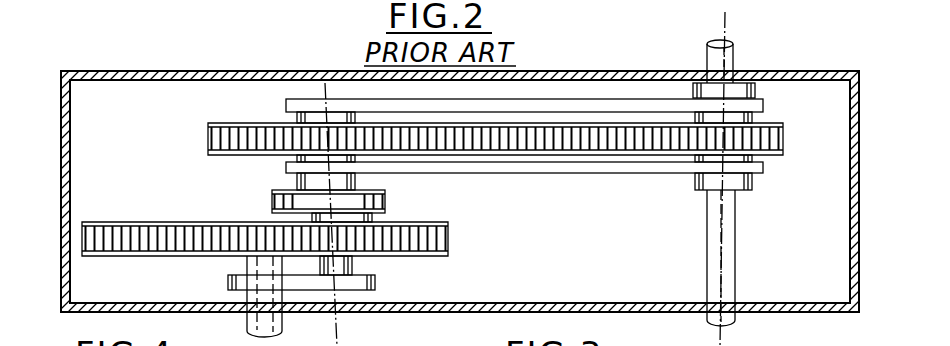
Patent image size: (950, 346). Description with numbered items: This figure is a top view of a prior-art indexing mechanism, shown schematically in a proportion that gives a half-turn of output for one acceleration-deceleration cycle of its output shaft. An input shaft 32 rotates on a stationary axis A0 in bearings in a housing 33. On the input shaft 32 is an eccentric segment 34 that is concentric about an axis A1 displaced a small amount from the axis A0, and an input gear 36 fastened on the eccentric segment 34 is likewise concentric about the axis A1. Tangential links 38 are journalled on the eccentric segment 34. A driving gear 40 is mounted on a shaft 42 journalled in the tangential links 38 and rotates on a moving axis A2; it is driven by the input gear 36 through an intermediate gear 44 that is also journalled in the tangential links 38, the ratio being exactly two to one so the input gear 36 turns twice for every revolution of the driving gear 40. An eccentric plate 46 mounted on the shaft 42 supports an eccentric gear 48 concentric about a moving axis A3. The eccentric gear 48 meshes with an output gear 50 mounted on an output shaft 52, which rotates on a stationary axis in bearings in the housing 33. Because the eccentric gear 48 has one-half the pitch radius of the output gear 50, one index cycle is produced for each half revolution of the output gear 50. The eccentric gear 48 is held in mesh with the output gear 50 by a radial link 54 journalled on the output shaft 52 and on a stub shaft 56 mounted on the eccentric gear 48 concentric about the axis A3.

The input shaft 32 is at (737, 287).
The housing 33 is at (857, 205).
The eccentric segment 34 is at (752, 183).
The input gear 36 is at (784, 135).
The tangential links 38 is at (638, 99).
The driving gear 40 is at (207, 142).
The shaft 42 is at (297, 185).
The intermediate gear 44 is at (493, 123).
The eccentric plate 46 is at (385, 200).
The eccentric gear 48 is at (417, 256).
The output gear 50 is at (170, 258).
The output shaft 52 is at (283, 326).
The radial link 54 is at (228, 281).
The stub shaft 56 is at (352, 262).
The axis A0 is at (707, 265).
The axis A1 is at (735, 31).
The moving axis A2 is at (323, 88).
The moving axis A3 is at (338, 323).